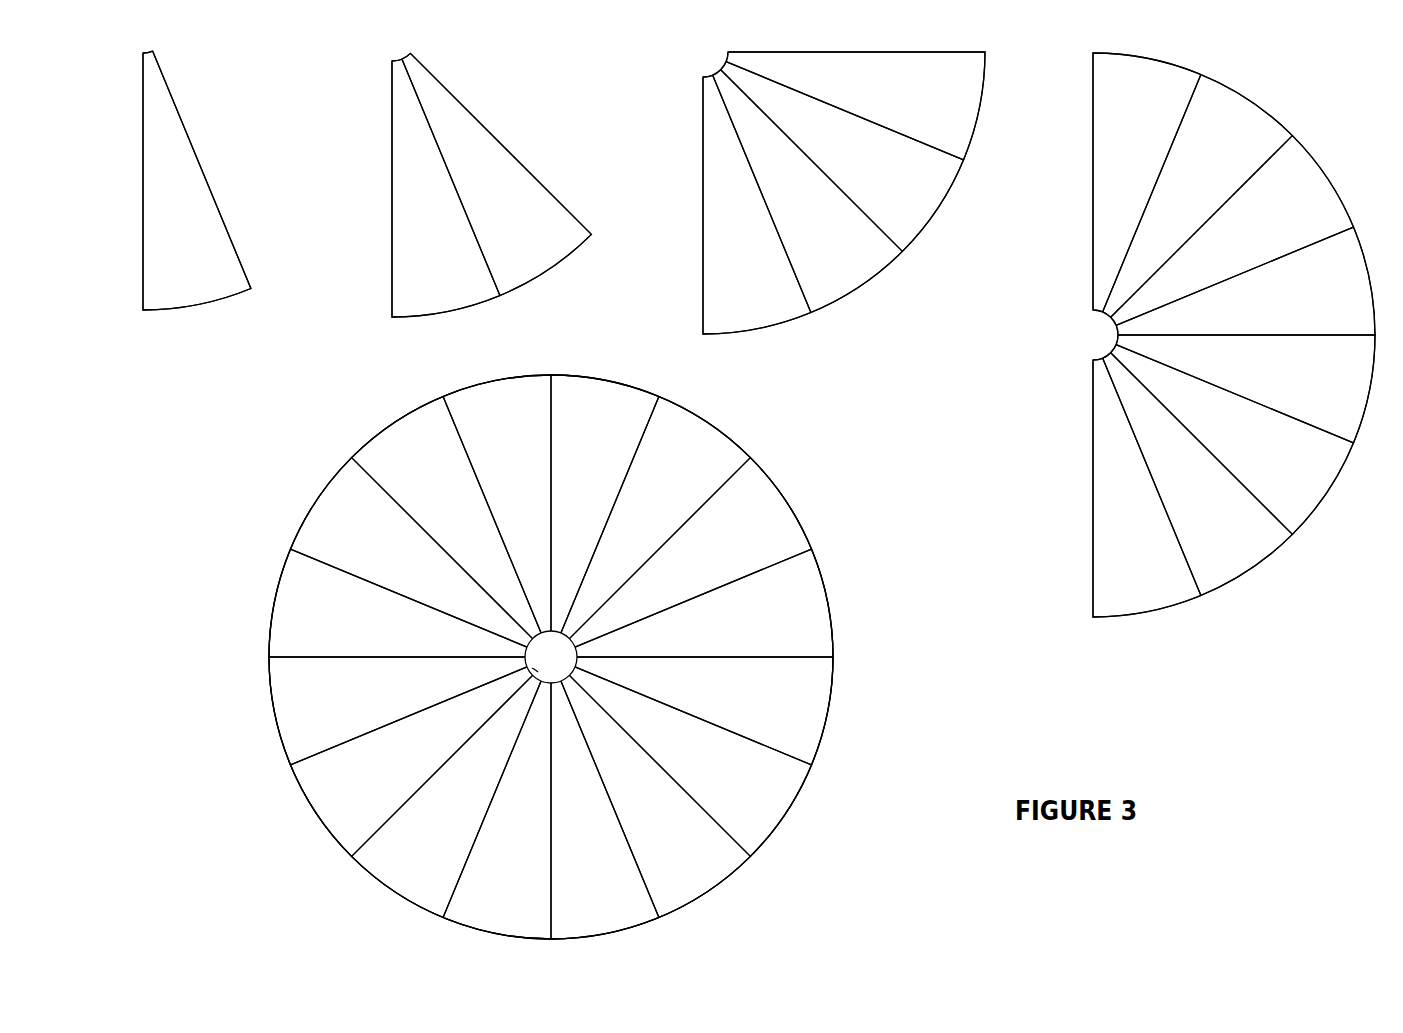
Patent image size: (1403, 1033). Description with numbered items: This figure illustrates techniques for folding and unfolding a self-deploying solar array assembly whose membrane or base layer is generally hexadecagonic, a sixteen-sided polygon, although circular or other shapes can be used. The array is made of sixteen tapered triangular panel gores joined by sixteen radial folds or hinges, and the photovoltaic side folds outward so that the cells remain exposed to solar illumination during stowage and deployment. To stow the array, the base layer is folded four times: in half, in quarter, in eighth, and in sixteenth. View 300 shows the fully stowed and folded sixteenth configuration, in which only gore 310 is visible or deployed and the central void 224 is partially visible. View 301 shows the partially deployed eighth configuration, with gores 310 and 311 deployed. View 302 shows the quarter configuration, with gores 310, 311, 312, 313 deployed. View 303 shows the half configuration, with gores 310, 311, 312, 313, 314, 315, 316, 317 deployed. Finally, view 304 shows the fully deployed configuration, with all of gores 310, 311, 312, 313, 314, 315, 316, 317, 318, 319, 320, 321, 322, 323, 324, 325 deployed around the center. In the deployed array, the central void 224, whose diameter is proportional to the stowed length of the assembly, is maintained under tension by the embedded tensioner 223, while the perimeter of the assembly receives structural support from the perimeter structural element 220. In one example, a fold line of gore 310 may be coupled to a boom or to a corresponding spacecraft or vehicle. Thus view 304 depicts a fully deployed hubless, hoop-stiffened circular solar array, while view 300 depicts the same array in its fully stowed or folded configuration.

The perimeter structural element 220 is at (274, 712).
The embedded tensioner 223 is at (534, 684).
The central void 224 is at (150, 42).
The view 300 is at (184, 83).
The view 301 is at (503, 78).
The view 302 is at (898, 302).
The view 303 is at (1280, 78).
The view 304 is at (304, 418).
The gore 310 is at (672, 495).
The gore 311 is at (847, 485).
The gore 312 is at (961, 459).
The gore 313 is at (975, 408).
The gore 314 is at (975, 442).
The gore 315 is at (961, 391).
The gore 316 is at (927, 357).
The gore 317 is at (876, 343).
The gore 318 is at (497, 504).
The gore 319 is at (446, 518).
The gore 320 is at (412, 552).
The gore 321 is at (398, 603).
The gore 322 is at (398, 711).
The gore 323 is at (412, 762).
The gore 324 is at (446, 796).
The gore 325 is at (497, 810).